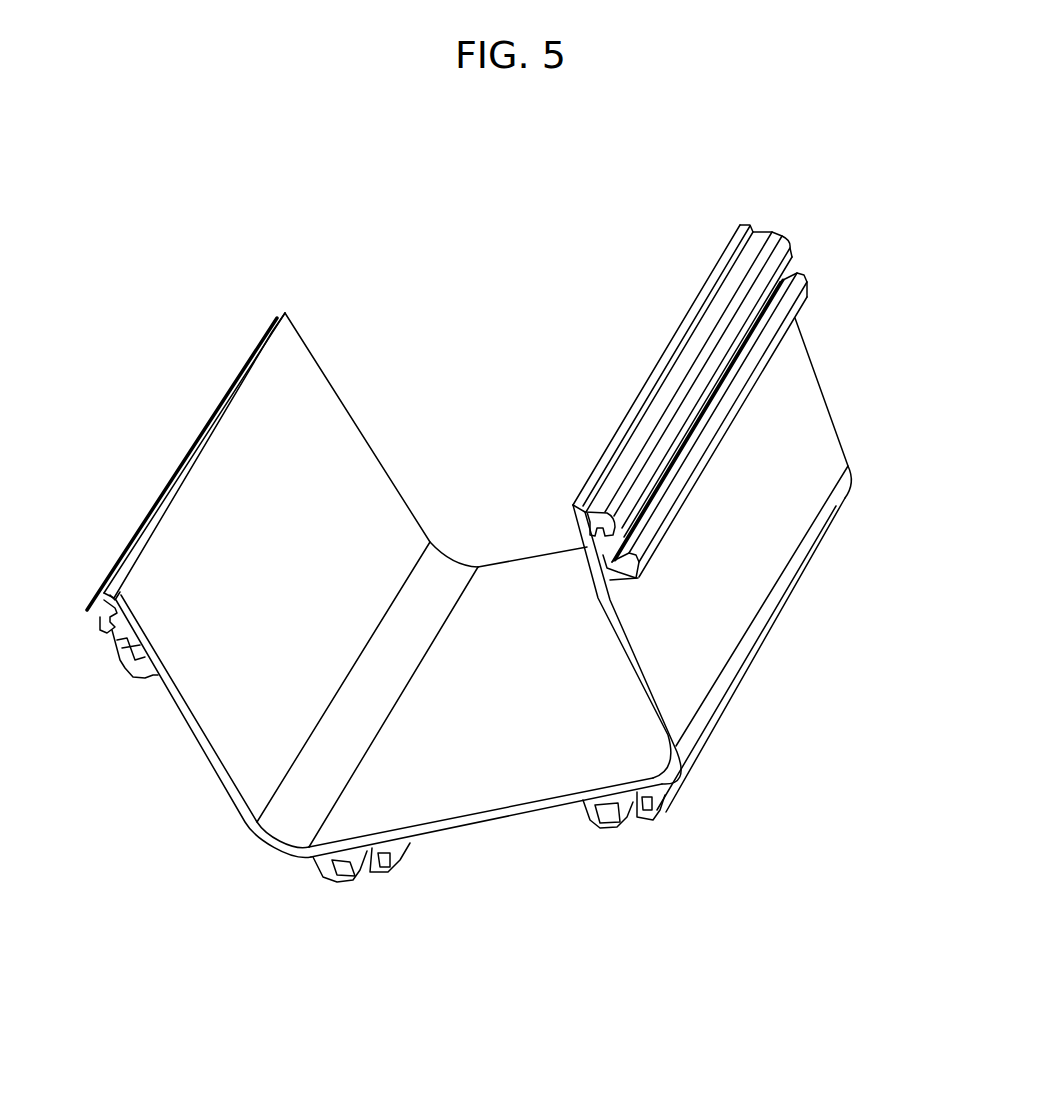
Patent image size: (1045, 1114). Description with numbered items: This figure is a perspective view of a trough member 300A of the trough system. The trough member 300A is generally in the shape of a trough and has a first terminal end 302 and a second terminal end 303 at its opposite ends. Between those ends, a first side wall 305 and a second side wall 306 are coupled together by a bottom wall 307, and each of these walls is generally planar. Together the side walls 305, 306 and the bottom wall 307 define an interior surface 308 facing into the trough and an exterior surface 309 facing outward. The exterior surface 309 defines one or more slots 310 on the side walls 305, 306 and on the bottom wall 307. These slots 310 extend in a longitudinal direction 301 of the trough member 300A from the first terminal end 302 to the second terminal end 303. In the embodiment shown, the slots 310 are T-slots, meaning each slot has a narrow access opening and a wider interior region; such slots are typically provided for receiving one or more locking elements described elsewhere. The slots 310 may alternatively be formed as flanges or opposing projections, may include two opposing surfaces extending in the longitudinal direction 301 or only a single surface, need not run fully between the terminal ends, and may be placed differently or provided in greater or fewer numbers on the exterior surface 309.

The trough member 300A is at (716, 333).
The longitudinal direction 301 is at (610, 405).
The first terminal end 302 is at (485, 826).
The second terminal end 303 is at (493, 560).
The first side wall 305 is at (783, 503).
The second side wall 306 is at (293, 418).
The bottom wall 307 is at (580, 637).
The interior surface 308 is at (480, 757).
The exterior surface 309 is at (783, 442).
The slots 310 is at (645, 542).